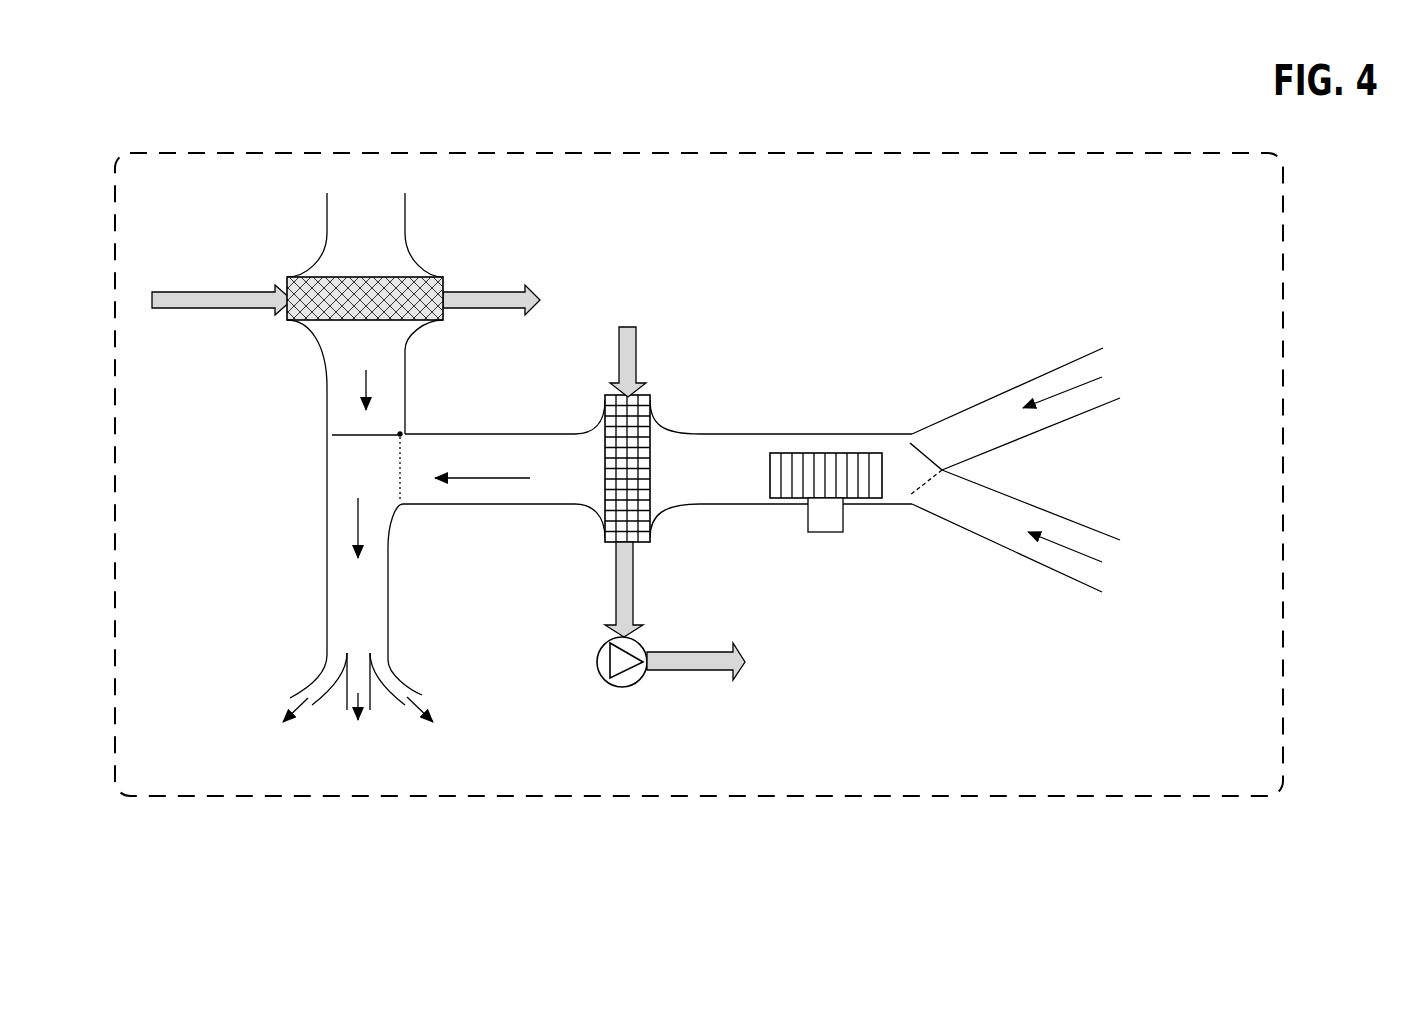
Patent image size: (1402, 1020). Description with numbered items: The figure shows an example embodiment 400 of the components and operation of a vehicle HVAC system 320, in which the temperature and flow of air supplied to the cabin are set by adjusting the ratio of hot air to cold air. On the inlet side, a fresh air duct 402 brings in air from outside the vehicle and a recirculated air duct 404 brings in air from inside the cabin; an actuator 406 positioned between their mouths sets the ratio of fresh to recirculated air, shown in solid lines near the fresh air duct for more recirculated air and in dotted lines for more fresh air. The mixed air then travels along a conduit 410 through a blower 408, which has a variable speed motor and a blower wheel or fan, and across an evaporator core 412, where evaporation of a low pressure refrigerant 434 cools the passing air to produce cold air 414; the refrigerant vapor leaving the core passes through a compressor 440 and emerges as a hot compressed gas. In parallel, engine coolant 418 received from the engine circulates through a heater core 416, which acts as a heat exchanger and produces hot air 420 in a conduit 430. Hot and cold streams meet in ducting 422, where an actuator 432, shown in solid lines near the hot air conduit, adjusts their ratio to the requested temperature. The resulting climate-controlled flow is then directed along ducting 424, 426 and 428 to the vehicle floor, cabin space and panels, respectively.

The HVAC system 320 is at (1077, 153).
The example embodiment 400 is at (90, 145).
The fresh air duct 402 is at (1057, 367).
The recirculated air duct 404 is at (1033, 562).
The actuator 406 is at (932, 460).
The blower 408 is at (790, 498).
The conduit 410 is at (735, 433).
The evaporator core 412 is at (642, 400).
The cold air 414 is at (475, 480).
The heater core 416 is at (335, 277).
The engine coolant 418 is at (500, 290).
The hot air 420 is at (372, 394).
The ducting 422 is at (391, 597).
The ducting 424 is at (315, 673).
The ducting 426 is at (358, 660).
The ducting 428 is at (403, 673).
The conduit 430 is at (327, 385).
The actuator 432 is at (350, 436).
The refrigerant 434 is at (643, 337).
The compressor 440 is at (643, 643).